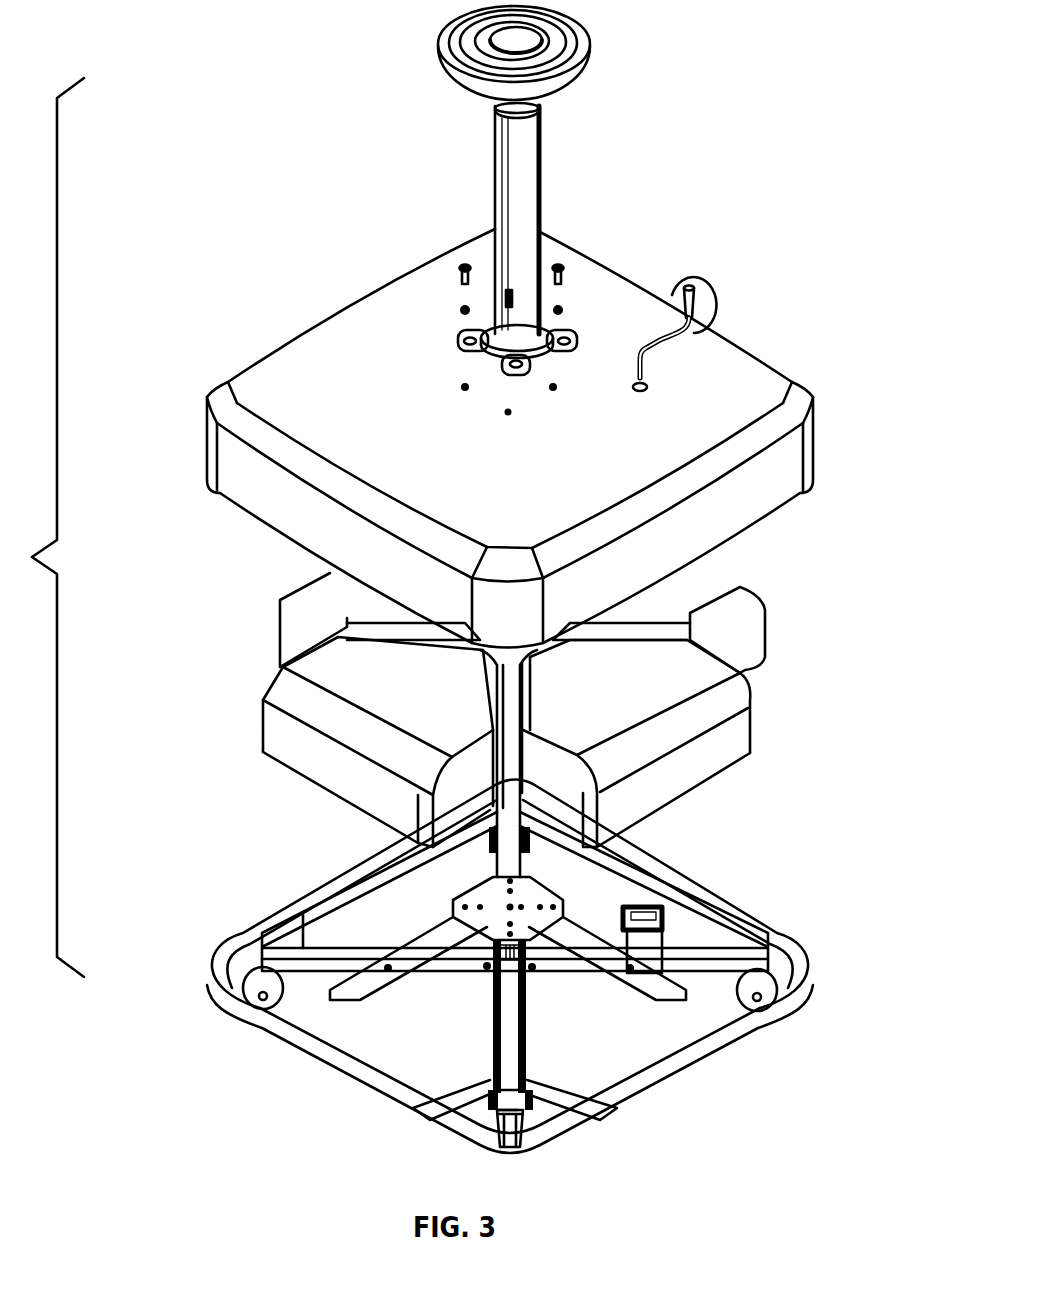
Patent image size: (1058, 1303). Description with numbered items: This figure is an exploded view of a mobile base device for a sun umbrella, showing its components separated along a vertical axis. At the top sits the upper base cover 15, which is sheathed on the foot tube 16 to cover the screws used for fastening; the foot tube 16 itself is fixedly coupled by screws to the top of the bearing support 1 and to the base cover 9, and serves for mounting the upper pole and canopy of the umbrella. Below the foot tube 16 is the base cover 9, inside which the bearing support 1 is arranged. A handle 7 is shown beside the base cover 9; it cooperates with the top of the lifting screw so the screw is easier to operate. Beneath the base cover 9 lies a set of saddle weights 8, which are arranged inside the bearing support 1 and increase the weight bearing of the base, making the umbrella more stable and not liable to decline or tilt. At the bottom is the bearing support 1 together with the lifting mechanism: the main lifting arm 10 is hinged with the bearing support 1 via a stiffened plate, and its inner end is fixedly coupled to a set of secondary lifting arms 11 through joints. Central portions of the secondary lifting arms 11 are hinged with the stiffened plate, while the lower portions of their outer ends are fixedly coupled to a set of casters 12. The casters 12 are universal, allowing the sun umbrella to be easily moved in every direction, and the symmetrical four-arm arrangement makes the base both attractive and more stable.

The bearing support 1 is at (812, 1000).
The handle 7 is at (700, 299).
The saddle weight 8 is at (765, 618).
The base cover 9 is at (813, 415).
The main lifting arm 10 is at (600, 910).
The secondary lifting arm 11 is at (303, 935).
The caster 12 is at (245, 1010).
The upper base cover 15 is at (590, 40).
The foot tube 16 is at (541, 205).